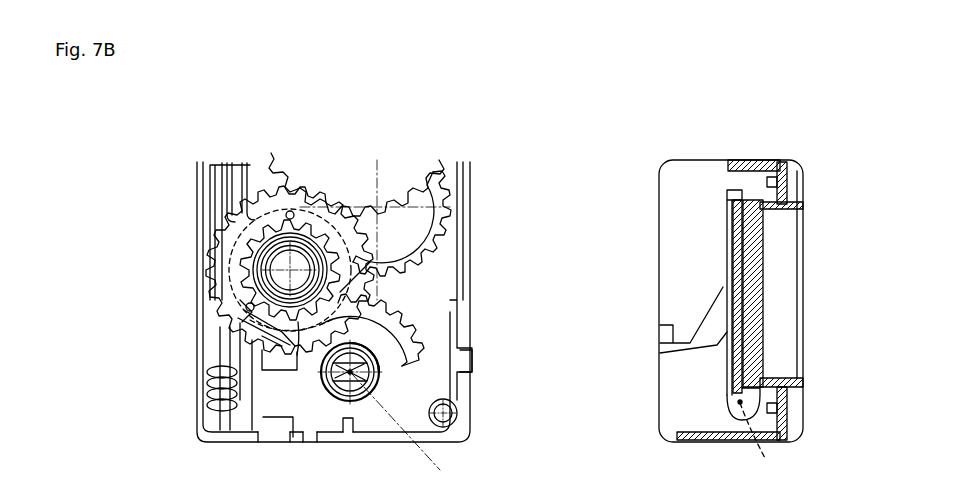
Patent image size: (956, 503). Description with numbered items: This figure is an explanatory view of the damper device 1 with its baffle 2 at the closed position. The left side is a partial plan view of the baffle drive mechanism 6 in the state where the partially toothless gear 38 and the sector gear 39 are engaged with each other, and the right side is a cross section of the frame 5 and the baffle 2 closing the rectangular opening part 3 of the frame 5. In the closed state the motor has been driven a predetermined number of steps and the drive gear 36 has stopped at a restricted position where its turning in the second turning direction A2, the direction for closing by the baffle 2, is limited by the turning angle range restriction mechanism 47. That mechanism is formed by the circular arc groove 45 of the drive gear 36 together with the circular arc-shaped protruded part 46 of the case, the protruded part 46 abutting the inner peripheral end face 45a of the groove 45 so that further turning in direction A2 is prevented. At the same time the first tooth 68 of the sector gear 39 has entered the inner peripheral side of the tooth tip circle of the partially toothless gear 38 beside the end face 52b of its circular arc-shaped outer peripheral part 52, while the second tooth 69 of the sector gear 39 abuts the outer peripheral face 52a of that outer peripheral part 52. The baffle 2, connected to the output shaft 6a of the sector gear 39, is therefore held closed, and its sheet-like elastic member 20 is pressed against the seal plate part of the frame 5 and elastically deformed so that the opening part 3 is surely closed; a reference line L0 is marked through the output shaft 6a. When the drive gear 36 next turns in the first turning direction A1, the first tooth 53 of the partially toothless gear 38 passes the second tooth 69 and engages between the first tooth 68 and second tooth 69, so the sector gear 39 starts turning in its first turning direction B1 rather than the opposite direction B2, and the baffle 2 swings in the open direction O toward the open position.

The damper device 1 is at (755, 137).
The baffle 2 is at (661, 286).
The opening part 3 is at (798, 243).
The frame 5 is at (804, 163).
The baffle drive mechanism 6 is at (431, 179).
The output shaft 6a is at (350, 378).
The elastic member 20 is at (760, 298).
The drive gear 36 is at (223, 224).
The partially toothless gear 38 is at (240, 253).
The sector gear 39 is at (372, 400).
The circular arc groove 45 is at (276, 212).
The inner peripheral end face 45a is at (270, 346).
The circular arc-shaped protruded part 46 is at (290, 377).
The turning angle range restriction mechanism 47 is at (203, 441).
The circular arc-shaped outer peripheral part 52 is at (278, 322).
The outer peripheral face 52a is at (280, 333).
The end face 52b is at (250, 312).
The first tooth of partially toothless gear 53 is at (352, 285).
The first tooth of sector gear 68 is at (300, 328).
The second tooth of sector gear 69 is at (468, 362).
The first turning direction A1 is at (360, 200).
The second turning direction A2 is at (228, 200).
The first turning direction of sector gear B1 is at (355, 283).
The second turning direction of sector gear B2 is at (437, 320).
The reference line L0 is at (571, 430).
The open direction O is at (627, 330).